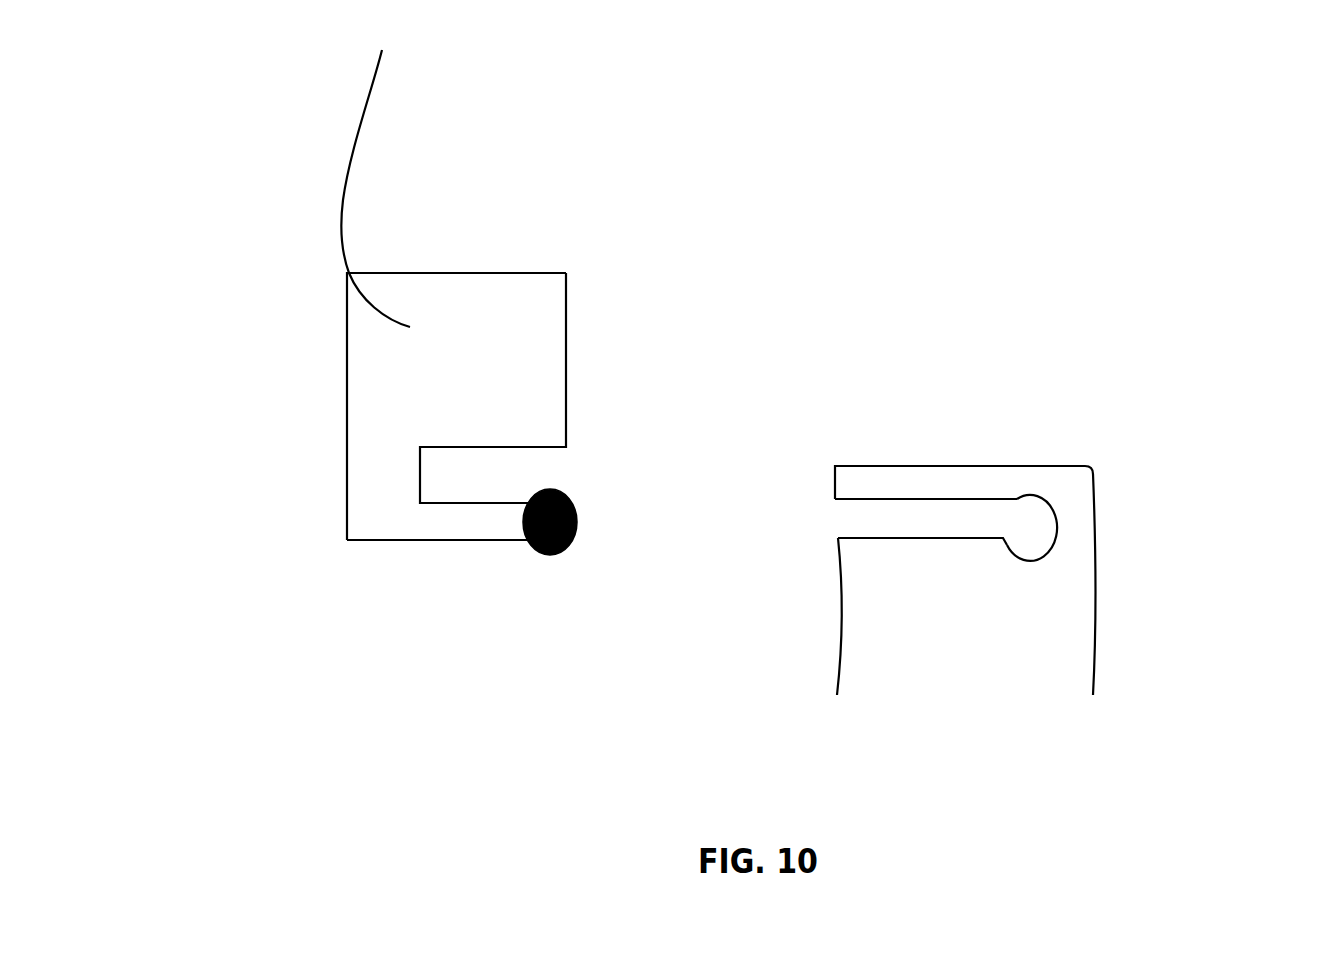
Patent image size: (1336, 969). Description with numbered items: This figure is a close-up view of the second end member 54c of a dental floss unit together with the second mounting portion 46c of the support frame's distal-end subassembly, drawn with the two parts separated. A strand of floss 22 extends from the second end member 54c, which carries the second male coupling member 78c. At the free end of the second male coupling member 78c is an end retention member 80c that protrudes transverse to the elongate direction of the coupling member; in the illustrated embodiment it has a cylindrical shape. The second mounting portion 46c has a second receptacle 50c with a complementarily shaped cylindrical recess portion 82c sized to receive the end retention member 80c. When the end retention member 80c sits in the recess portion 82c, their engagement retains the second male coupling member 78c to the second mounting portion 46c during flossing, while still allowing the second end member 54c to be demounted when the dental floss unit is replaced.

The strap 22 is at (360, 132).
The second end member 54c is at (613, 217).
The second male coupling member 78c is at (483, 560).
The end retention member 80c is at (573, 502).
The second mounting portion 46c is at (1135, 422).
The second receptacle 50c is at (843, 520).
The recess portion 82c is at (1025, 516).